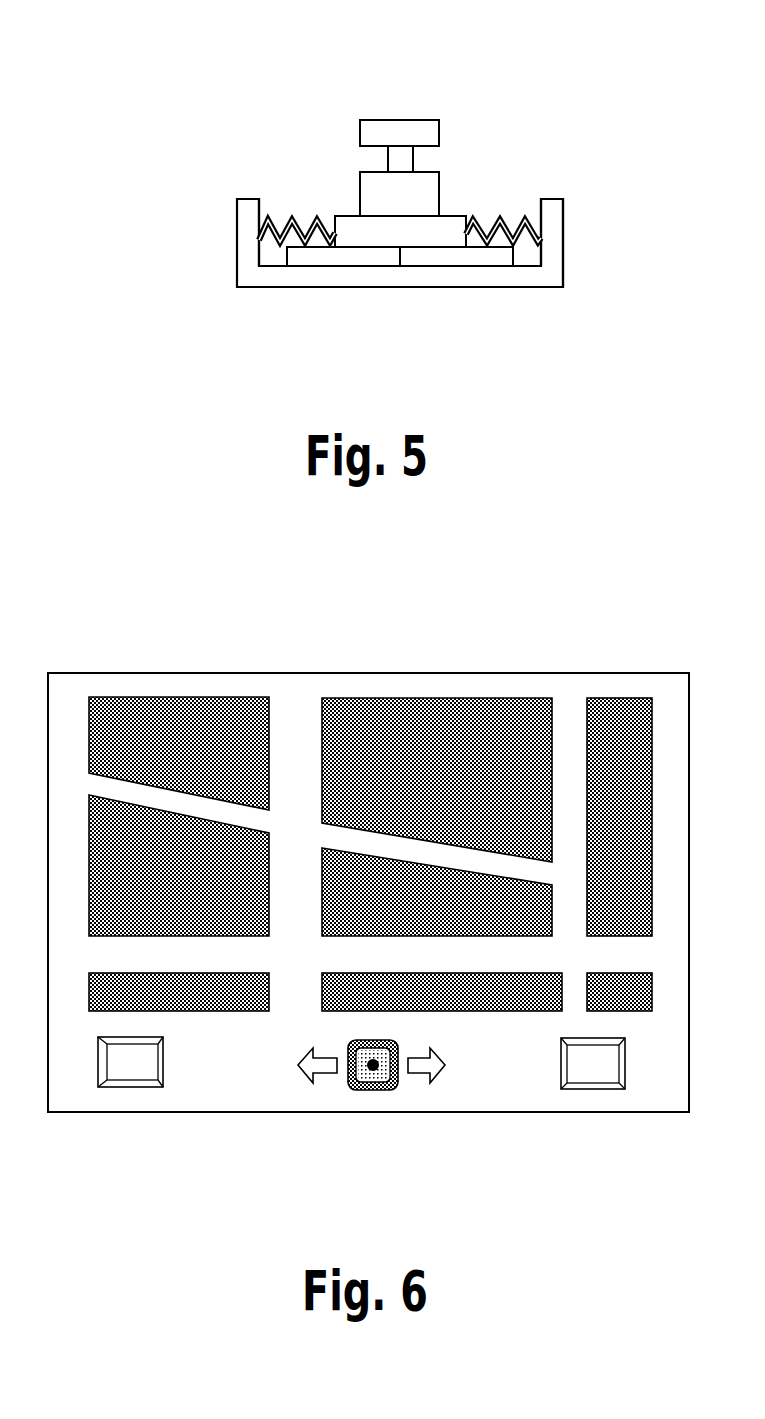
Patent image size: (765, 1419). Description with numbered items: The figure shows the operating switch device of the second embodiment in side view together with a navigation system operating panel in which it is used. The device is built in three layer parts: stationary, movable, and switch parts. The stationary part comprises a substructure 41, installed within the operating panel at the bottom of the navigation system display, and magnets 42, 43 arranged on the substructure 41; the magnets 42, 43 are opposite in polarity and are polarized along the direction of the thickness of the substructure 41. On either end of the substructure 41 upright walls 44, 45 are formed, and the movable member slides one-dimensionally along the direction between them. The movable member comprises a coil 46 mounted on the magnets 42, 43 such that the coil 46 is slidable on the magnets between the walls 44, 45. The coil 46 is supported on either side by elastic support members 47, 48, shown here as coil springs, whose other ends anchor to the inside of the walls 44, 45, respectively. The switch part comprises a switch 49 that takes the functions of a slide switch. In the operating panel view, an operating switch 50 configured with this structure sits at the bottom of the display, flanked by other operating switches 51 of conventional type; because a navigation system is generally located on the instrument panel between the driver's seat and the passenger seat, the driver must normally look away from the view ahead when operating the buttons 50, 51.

In FIG. 5, the substructure 41 is at (502, 280).
In FIG. 5, the magnet 42 is at (338, 258).
In FIG. 5, the magnet 43 is at (450, 258).
In FIG. 5, the upright wall 44 is at (248, 207).
In FIG. 5, the upright wall 45 is at (552, 207).
In FIG. 5, the coil 46 is at (447, 232).
In FIG. 5, the elastic support member 47 is at (302, 220).
In FIG. 5, the elastic support member 48 is at (498, 228).
In FIG. 5, the switch 49 is at (397, 125).
In FIG. 6, the operating switch 50 is at (370, 1088).
In FIG. 6, the operating switch 51 is at (130, 1088).